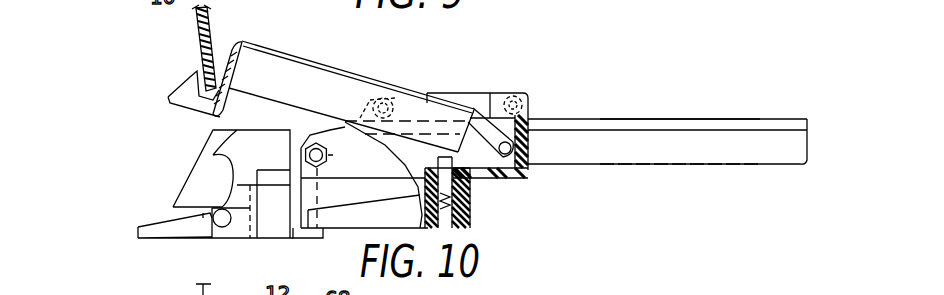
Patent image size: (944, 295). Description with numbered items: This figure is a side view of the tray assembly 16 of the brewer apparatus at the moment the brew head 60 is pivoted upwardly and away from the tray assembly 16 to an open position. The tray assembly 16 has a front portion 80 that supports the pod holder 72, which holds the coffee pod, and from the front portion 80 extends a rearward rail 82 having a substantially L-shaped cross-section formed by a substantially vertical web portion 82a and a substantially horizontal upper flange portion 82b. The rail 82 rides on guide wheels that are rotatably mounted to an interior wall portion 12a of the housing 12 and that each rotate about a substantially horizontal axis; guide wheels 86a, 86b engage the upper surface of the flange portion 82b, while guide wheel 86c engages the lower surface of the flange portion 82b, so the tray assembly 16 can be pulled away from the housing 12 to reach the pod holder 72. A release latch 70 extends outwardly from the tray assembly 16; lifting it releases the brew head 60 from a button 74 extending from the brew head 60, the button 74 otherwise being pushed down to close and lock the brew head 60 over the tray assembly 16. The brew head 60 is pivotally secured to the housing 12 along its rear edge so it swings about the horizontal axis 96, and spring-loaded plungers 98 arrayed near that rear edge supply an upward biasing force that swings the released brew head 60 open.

The housing 12 is at (216, 34).
The first interior wall portion 12a is at (473, 93).
The tray assembly 16 is at (142, 184).
The brew head 60 is at (322, 64).
The release latch 70 is at (137, 238).
The pod holder 72 is at (195, 173).
The button 74 is at (187, 83).
The front portion 80 is at (257, 228).
The first rail 82 is at (795, 143).
The web portion 82a is at (688, 147).
The upper flange portion 82b is at (675, 118).
The guide wheel 86a is at (383, 95).
The guide wheel 86b is at (512, 90).
The guide wheel 86c is at (302, 240).
The horizontal axis 96 is at (507, 155).
The spring-loaded plunger 98 is at (477, 207).